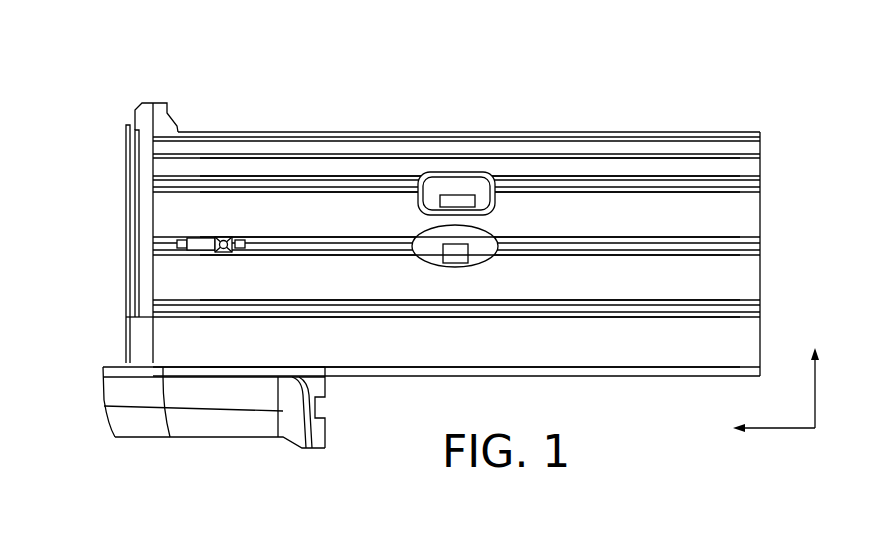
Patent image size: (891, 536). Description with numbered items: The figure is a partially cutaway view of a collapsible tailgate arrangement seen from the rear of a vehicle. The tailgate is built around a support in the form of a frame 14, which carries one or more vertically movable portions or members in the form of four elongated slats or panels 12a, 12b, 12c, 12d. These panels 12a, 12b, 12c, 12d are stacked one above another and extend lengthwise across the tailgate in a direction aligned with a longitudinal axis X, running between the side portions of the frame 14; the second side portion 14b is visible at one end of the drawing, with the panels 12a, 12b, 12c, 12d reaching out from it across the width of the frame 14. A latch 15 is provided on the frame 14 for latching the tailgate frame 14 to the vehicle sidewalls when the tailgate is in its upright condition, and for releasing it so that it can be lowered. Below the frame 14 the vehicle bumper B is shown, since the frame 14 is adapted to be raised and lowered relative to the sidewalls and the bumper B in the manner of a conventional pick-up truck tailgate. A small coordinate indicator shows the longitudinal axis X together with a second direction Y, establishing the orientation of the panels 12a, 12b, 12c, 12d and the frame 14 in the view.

The frame 14 is at (652, 125).
The second side portion 14b is at (158, 103).
The panel 12a is at (745, 343).
The panel 12b is at (750, 283).
The panel 12c is at (750, 225).
The panel 12d is at (757, 163).
The latch 15 is at (458, 194).
The bumper B is at (235, 432).
The longitudinal axis X is at (776, 431).
The Y direction Y is at (818, 392).